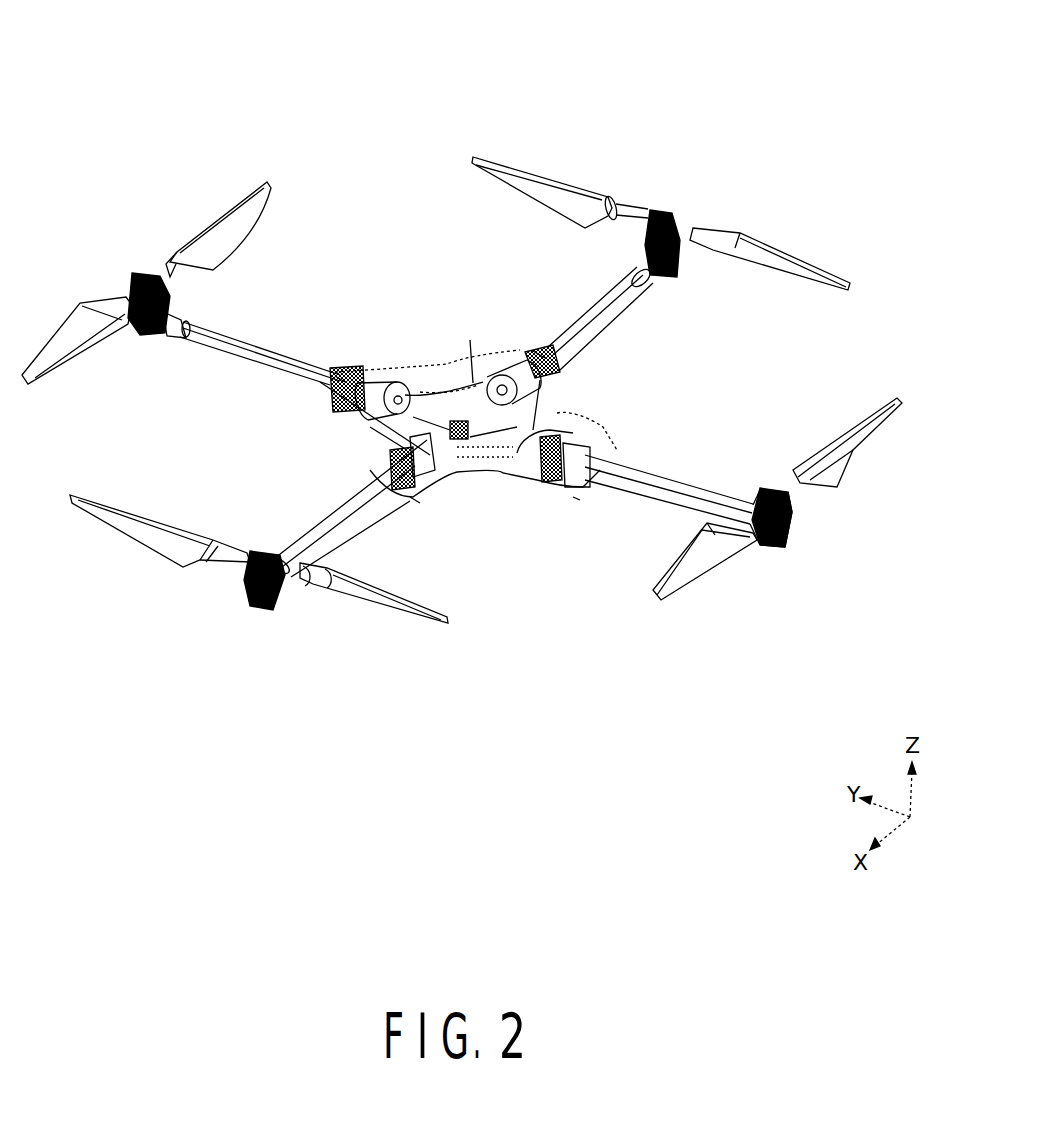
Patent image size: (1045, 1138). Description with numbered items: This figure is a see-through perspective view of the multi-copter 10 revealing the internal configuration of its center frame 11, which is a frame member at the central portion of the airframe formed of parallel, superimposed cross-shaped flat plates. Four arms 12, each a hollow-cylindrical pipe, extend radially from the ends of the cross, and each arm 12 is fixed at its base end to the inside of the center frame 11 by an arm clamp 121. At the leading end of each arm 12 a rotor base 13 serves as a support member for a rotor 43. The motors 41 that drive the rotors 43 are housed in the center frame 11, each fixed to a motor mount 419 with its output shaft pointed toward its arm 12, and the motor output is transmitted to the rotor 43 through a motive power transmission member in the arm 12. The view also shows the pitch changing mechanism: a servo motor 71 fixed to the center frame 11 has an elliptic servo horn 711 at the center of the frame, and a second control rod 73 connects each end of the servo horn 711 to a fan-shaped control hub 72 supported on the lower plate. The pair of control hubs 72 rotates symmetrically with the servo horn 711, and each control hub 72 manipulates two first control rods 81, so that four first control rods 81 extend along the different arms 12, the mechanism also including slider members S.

The multi-copter 10 is at (82, 42).
The center frame 11 is at (500, 482).
The arm 12 is at (675, 498).
The rotor base 13 is at (762, 553).
The motor 41 is at (558, 418).
The motor mount 419 is at (335, 393).
The rotor 43 is at (798, 501).
The servo motor 71 is at (448, 420).
The servo horn 711 is at (462, 395).
The control hub 72 is at (385, 428).
The second control rod 73 is at (477, 395).
The first control rod 81 is at (740, 512).
The arm clamp 121 is at (333, 375).
The slider member S is at (800, 535).